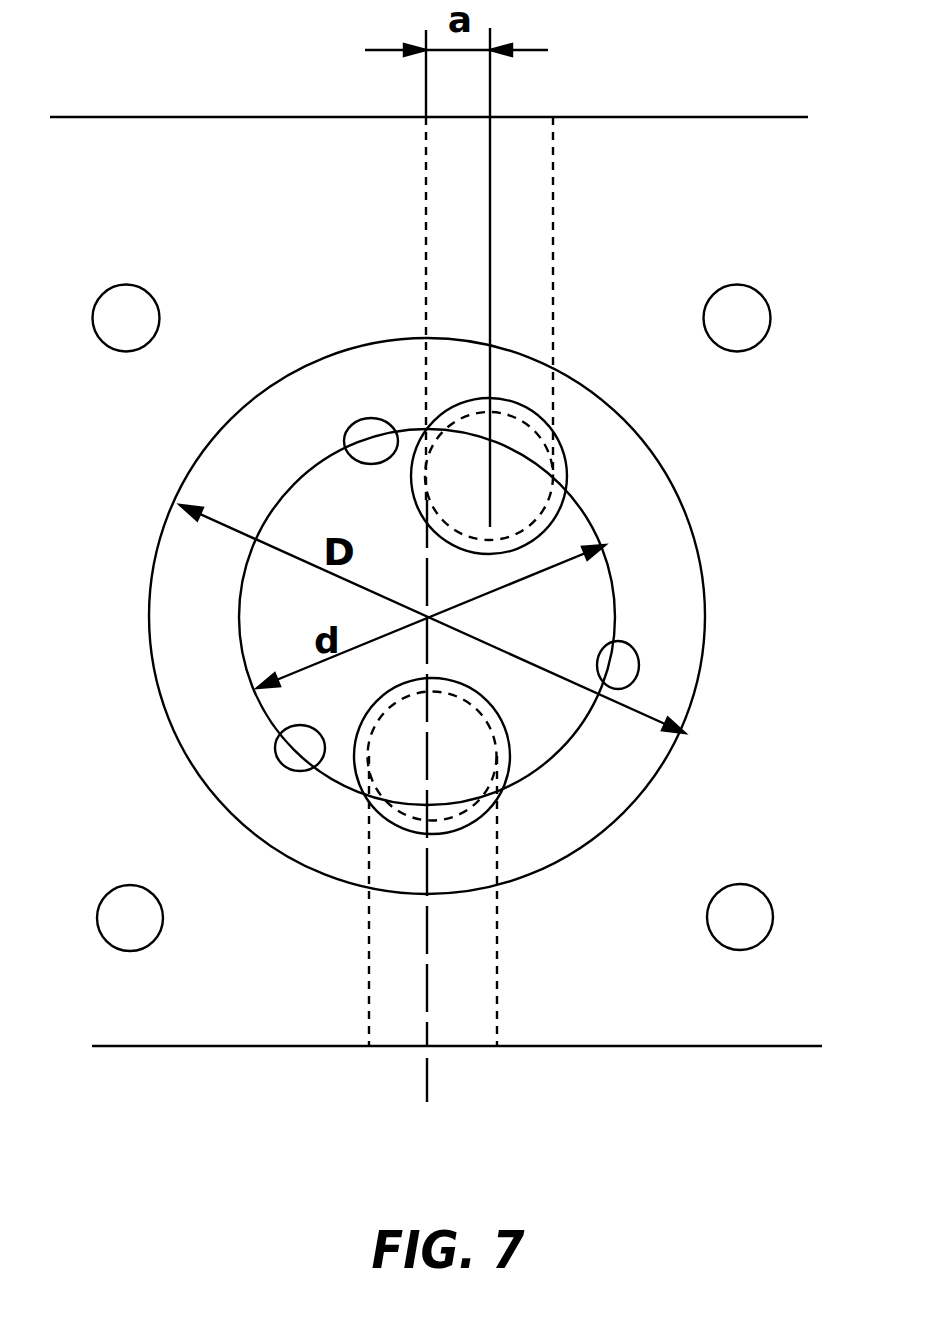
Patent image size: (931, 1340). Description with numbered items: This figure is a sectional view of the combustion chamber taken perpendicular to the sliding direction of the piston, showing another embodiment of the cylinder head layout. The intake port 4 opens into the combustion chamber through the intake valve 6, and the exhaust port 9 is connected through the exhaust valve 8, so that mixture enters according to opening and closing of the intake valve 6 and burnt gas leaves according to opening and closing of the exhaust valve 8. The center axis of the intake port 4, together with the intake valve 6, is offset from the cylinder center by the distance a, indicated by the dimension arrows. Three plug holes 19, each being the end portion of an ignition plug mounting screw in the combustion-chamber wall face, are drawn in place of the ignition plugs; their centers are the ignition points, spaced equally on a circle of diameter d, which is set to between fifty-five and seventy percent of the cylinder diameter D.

The intake port 4 is at (530, 233).
The intake valve 6 is at (570, 470).
The exhaust valve 8 is at (513, 762).
The exhaust port 9 is at (472, 998).
The plug hole 19 is at (637, 647).